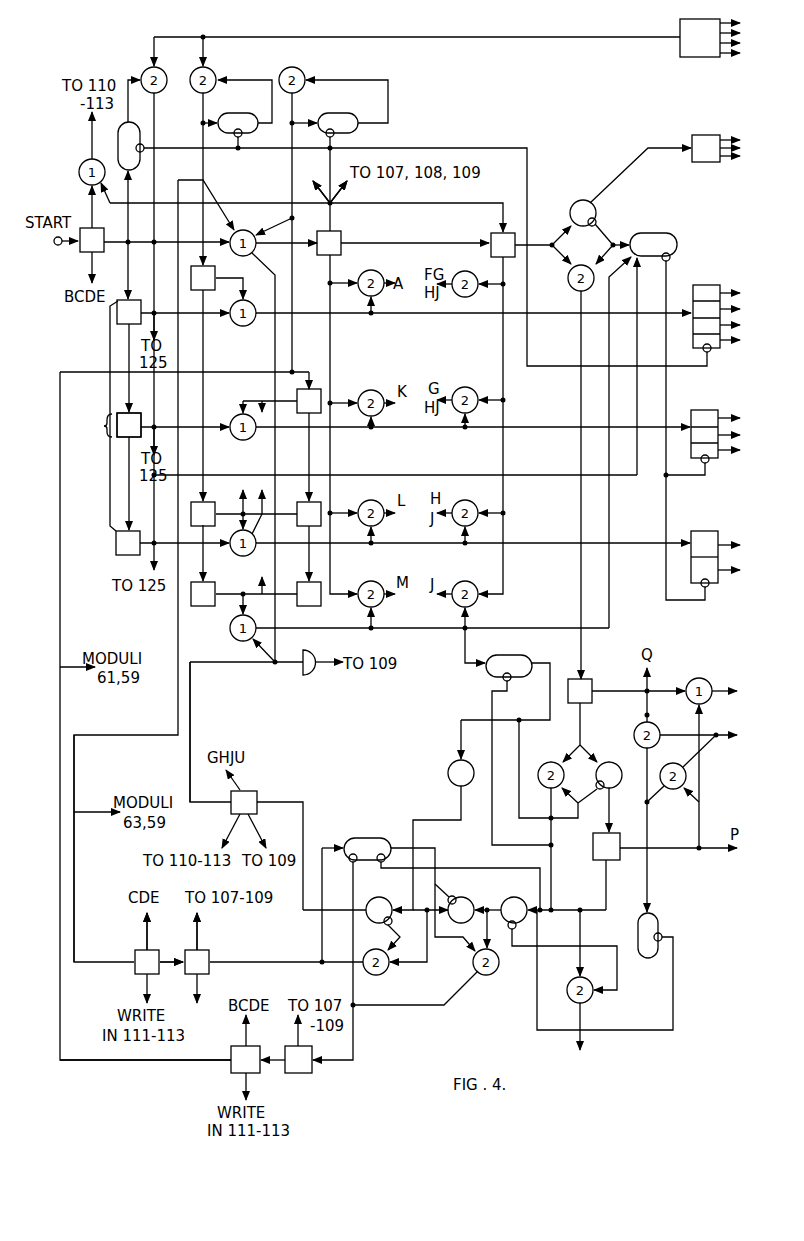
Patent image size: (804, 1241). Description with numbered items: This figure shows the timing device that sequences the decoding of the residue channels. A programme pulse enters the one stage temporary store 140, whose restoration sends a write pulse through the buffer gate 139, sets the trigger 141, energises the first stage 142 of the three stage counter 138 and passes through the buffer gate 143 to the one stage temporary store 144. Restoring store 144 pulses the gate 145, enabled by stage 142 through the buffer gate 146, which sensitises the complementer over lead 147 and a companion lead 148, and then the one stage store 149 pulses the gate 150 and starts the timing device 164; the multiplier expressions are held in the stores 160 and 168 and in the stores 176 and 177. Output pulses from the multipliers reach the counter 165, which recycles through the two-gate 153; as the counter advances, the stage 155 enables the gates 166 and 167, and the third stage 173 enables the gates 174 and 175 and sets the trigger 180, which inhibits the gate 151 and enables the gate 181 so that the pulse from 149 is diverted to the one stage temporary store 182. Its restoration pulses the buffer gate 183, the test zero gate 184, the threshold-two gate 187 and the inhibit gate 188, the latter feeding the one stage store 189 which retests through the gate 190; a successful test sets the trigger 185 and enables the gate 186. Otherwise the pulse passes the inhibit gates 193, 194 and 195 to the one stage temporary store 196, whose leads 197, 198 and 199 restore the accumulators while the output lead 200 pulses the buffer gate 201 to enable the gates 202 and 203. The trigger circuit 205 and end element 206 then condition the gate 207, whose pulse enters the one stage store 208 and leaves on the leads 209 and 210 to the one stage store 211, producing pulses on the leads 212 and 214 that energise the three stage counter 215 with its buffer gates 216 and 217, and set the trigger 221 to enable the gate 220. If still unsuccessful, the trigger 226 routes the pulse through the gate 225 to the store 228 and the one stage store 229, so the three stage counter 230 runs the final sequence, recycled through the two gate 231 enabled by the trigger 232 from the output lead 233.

The three stage counter 138 is at (105, 425).
The buffer gate 139 is at (77, 172).
The one stage temporary store 140 is at (79, 251).
The trigger 141 is at (120, 146).
The first stage of counter 142 is at (140, 302).
The buffer gate 143 is at (249, 233).
The one stage temporary store 144 is at (341, 240).
The gate 145 is at (372, 275).
The buffer gate 146 is at (242, 325).
The lead 147 is at (311, 192).
The output line 148 is at (350, 192).
The one stage store 149 is at (488, 237).
The gate 150 is at (466, 275).
The gate 151 is at (570, 204).
The two-gate 153 is at (150, 68).
The stage 155 is at (125, 434).
The store 160 is at (711, 308).
The timing device 164 is at (704, 139).
The counter 165 is at (680, 26).
The gate 166 is at (372, 394).
The gate 167 is at (466, 391).
The store 168 is at (709, 426).
The third stage of counter 173 is at (113, 543).
The gate 174 is at (372, 504).
The gate 175 is at (466, 504).
The store 176 is at (701, 538).
The store 177 is at (699, 579).
The trigger 180 is at (653, 239).
The gate 181 is at (564, 282).
The one stage temporary store 182 is at (583, 689).
The buffer gate 183 is at (701, 682).
The test zero circuit gate 184 is at (636, 728).
The trigger 185 is at (663, 932).
The gate 186 is at (591, 998).
The threshold-two gate 187 is at (543, 766).
The inhibit gate 188 is at (617, 766).
The one stage store 189 is at (595, 855).
The gate 190 is at (672, 766).
The inhibit gate 193 is at (514, 905).
The inhibit gate 194 is at (467, 902).
The inhibit gate 195 is at (379, 903).
The one stage temporary store 196 is at (258, 795).
The lead 197 is at (246, 778).
The lead 198 is at (216, 831).
The lead 199 is at (270, 831).
The output lead 200 is at (190, 718).
The buffer gate 201 is at (228, 634).
The gate 202 is at (372, 585).
The gate 203 is at (466, 585).
The trigger circuit 205 is at (509, 659).
The end element 206 is at (444, 763).
The gate 207 is at (373, 972).
The one stage store 208 is at (191, 967).
The lead 209 is at (200, 935).
The lead 210 is at (183, 957).
The one stage store 211 is at (141, 967).
The lead 212 is at (143, 937).
The lead 214 is at (76, 876).
The three stage counter 215 is at (215, 276).
The buffer gate 216 is at (242, 439).
The buffer gate 217 is at (242, 552).
The gate 220 is at (197, 69).
The trigger 221 is at (238, 116).
The gate 225 is at (493, 971).
The trigger 226 is at (367, 839).
The store 228 is at (301, 1072).
The one stage store 229 is at (241, 1063).
The three stage counter 230 is at (311, 502).
The two gate 231 is at (281, 70).
The trigger 232 is at (338, 116).
The output lead 233 is at (160, 1061).